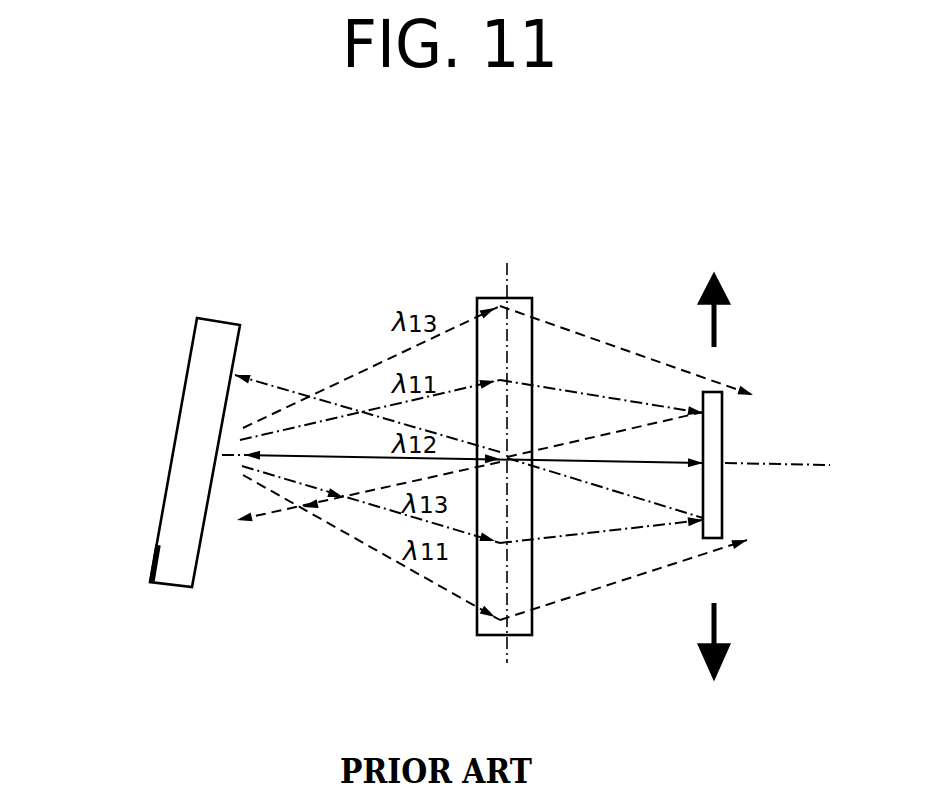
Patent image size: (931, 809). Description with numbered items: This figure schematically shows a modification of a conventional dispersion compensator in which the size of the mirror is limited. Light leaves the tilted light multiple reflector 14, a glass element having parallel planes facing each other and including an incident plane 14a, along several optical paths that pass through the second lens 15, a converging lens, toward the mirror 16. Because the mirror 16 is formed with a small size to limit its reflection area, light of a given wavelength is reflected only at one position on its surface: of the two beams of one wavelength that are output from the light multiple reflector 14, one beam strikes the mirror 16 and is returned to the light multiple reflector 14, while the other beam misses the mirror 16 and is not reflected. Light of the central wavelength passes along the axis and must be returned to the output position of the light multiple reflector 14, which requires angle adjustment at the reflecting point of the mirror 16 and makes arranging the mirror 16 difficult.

The light multiple reflector 14 is at (222, 318).
The incident plane 14a is at (152, 565).
The second lens 15 is at (525, 298).
The mirror 16 is at (713, 538).